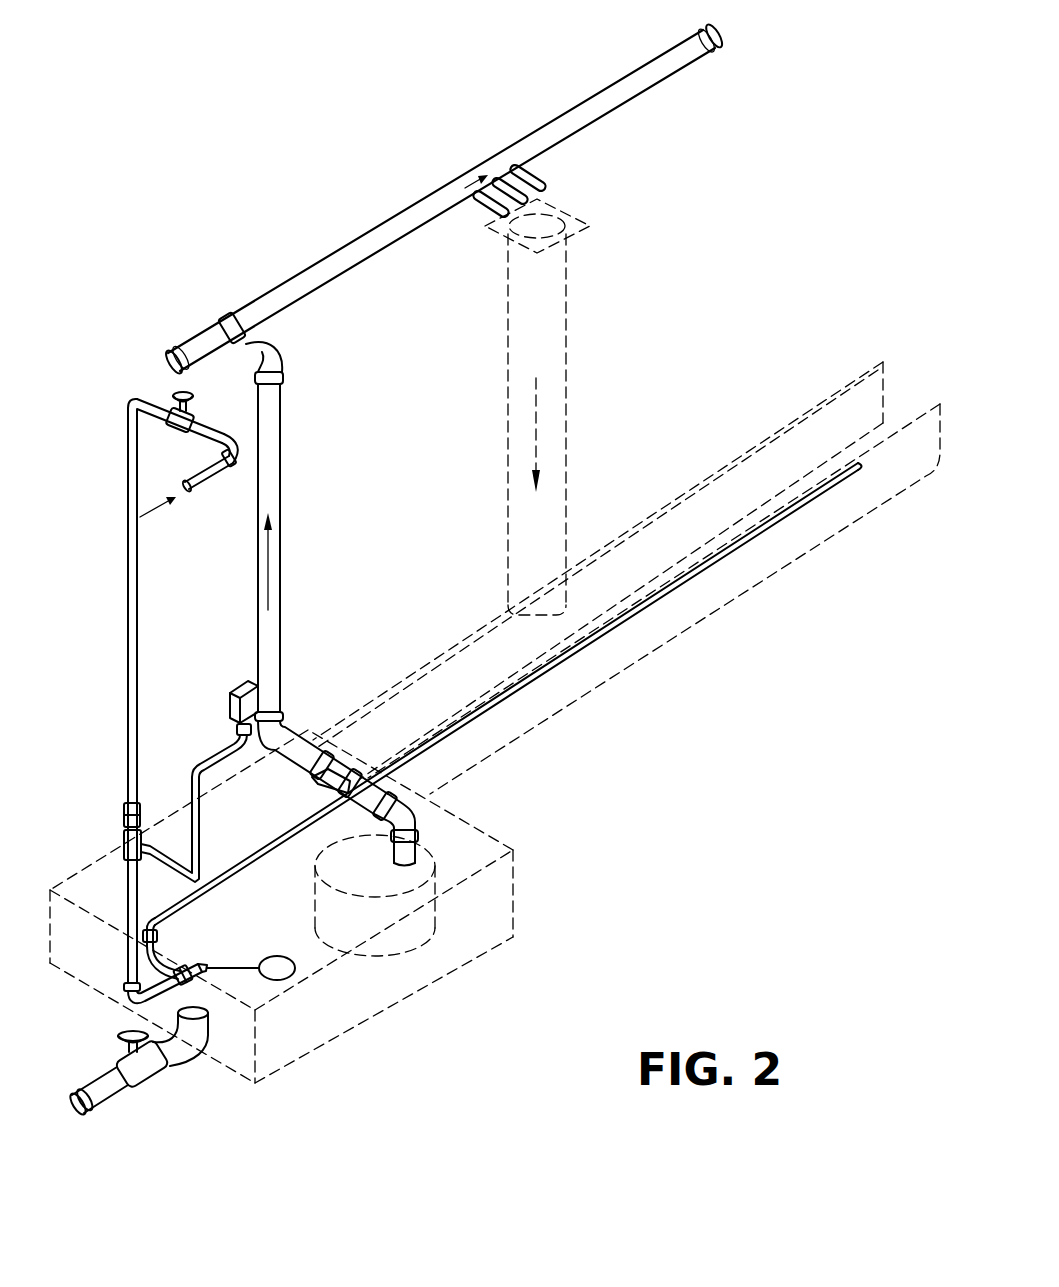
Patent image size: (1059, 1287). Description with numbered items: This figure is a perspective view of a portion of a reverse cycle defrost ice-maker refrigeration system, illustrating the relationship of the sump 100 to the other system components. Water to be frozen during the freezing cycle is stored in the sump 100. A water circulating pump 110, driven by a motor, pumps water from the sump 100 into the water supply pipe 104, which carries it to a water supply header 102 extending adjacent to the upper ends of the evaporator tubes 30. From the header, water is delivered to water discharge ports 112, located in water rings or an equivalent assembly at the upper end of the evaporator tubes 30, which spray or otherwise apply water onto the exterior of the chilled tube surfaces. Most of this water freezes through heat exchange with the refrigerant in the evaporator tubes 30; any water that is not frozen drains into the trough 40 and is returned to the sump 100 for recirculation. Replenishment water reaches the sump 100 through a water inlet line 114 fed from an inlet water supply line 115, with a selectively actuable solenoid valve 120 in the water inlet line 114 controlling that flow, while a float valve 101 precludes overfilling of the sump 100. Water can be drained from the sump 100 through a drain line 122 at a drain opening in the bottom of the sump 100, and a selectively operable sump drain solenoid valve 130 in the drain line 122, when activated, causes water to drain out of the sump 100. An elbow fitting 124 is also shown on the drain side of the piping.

The evaporator tubes 30 is at (566, 355).
The trough 40 is at (810, 410).
The sump 100 is at (518, 889).
The float valve 101 is at (277, 962).
The water supply header 102 is at (352, 247).
The water supply pipe 104 is at (285, 530).
The water circulating pump 110 is at (348, 895).
The water discharge ports 112 is at (480, 192).
The water inlet line 114 is at (130, 500).
The inlet water supply line 115 is at (203, 478).
The solenoid valve 120 is at (188, 388).
The drain line 122 is at (103, 1083).
The elbow 124 is at (208, 1020).
The sump drain solenoid valve 130 is at (137, 1102).